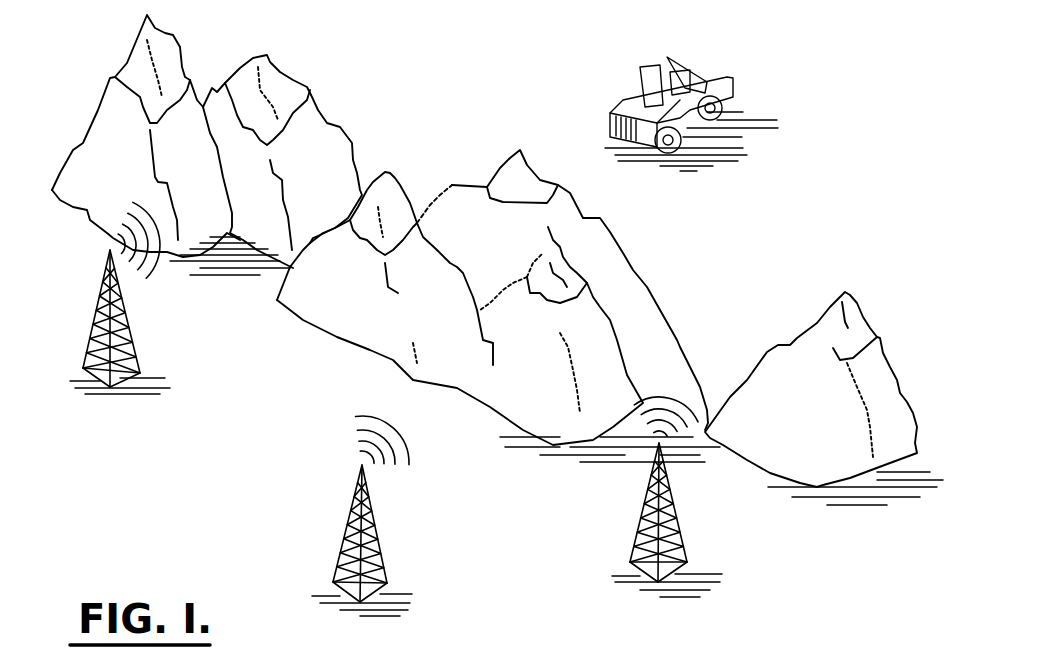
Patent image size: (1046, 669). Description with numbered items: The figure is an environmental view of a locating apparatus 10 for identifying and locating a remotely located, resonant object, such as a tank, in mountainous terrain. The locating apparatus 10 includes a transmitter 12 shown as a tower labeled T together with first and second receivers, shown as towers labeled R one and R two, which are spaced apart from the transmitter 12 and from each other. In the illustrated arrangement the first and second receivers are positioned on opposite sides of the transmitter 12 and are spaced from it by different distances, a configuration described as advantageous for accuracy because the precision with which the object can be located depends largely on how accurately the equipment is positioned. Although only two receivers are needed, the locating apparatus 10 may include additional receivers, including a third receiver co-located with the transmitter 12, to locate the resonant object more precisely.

The locating apparatus 10 is at (160, 480).
The transmitter 12 is at (368, 507).